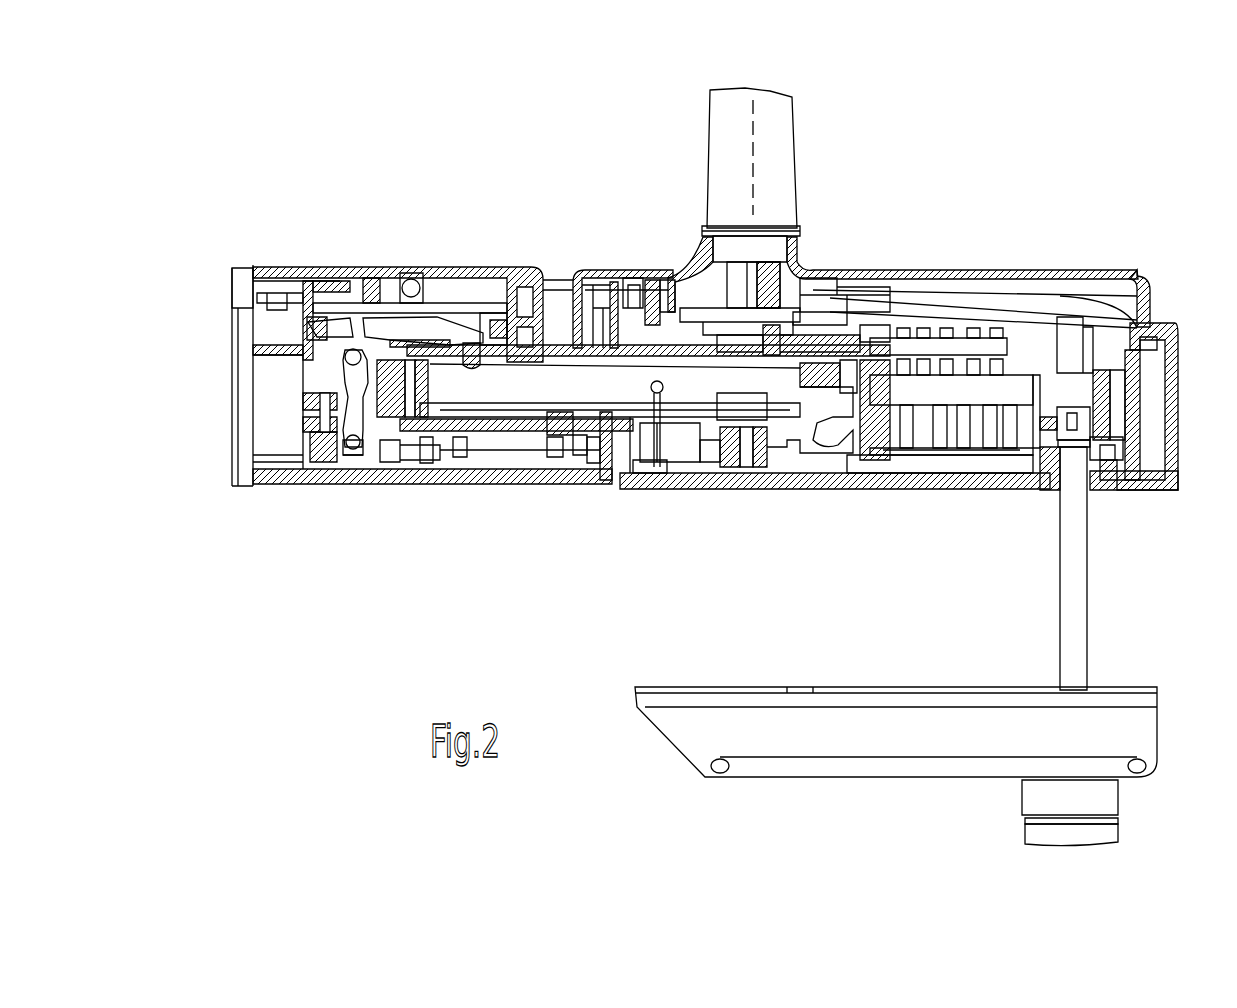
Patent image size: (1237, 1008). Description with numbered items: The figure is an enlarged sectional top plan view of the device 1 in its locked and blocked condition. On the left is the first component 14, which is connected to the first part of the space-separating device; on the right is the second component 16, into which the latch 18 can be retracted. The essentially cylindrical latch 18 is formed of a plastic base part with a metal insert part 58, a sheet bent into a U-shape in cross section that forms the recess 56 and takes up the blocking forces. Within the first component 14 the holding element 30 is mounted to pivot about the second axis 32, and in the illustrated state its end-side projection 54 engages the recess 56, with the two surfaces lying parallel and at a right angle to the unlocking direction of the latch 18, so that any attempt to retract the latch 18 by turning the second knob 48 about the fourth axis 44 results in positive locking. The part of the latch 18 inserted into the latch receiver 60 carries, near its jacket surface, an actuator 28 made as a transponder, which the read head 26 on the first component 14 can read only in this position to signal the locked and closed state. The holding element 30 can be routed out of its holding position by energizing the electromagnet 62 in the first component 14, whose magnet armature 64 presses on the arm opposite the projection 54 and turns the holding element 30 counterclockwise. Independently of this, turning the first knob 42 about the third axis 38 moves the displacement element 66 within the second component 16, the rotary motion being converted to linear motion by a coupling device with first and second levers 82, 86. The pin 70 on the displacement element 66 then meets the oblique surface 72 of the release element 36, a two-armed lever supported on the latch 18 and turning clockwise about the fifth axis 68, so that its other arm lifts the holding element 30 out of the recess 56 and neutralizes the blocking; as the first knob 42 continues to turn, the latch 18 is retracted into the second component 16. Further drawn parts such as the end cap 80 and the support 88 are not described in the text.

The device 1 is at (438, 158).
The first component 14 is at (244, 262).
The second component 16 is at (1076, 270).
The latch 18 is at (487, 484).
The read head 26 is at (458, 484).
The actuator 28 is at (531, 484).
The holding element 30 is at (379, 320).
The second axis 32 is at (345, 338).
The release element 36 is at (583, 484).
The third axis 38 is at (1064, 565).
The first knob 42 is at (1042, 832).
The fourth axis 44 is at (756, 150).
The second knob 48 is at (778, 188).
The projection 54 is at (474, 330).
The recess 56 is at (506, 335).
The insert part 58 is at (553, 343).
The latch receiver 60 is at (417, 484).
The electromagnet 62 is at (236, 487).
The magnet armature 64 is at (300, 484).
The displacement element 66 is at (748, 489).
The fifth axis 68 is at (663, 489).
The pin 70 is at (800, 489).
The oblique surface 72 is at (815, 489).
The end cap 80 is at (1105, 489).
The first lever 82 is at (943, 489).
The second lever 86 is at (882, 489).
The support 88 is at (765, 489).